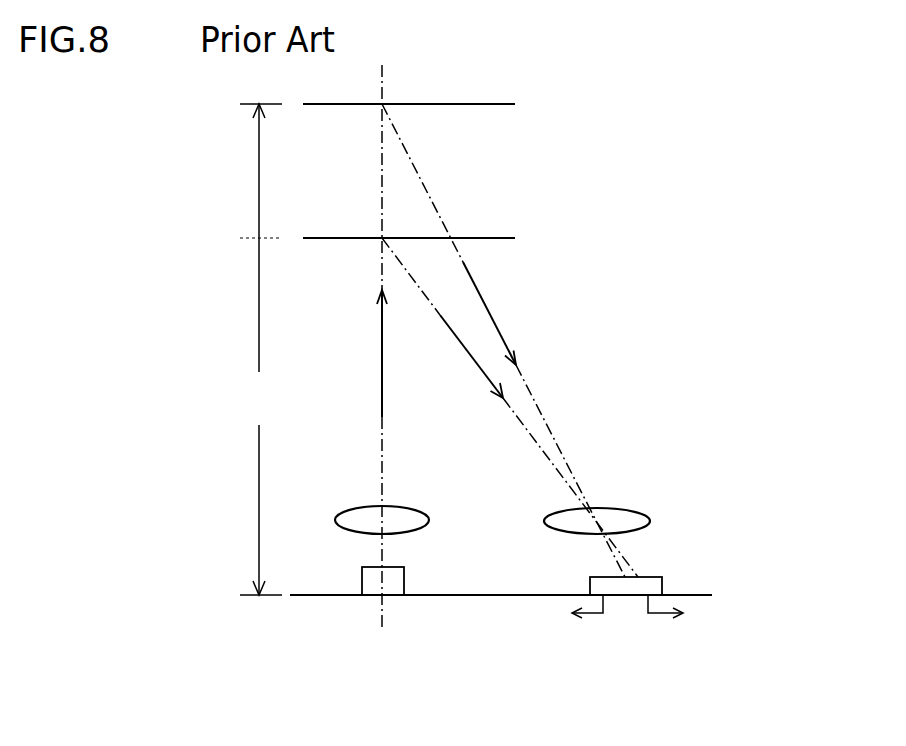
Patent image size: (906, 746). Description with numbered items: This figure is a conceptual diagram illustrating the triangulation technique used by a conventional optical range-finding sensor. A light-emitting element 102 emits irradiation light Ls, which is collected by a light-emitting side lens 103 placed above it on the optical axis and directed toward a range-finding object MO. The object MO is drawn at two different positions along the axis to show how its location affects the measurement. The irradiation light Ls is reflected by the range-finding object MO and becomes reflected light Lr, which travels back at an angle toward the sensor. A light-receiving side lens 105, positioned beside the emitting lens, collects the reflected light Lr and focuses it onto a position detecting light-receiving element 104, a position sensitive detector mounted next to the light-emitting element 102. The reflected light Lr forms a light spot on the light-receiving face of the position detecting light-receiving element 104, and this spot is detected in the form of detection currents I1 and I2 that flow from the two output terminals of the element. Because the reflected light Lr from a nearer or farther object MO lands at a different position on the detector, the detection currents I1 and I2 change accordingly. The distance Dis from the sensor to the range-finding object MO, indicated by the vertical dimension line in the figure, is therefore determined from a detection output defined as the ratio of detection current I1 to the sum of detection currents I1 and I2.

The light-emitting element 102 is at (393, 583).
The light-emitting side lens 103 is at (357, 518).
The position detecting light-receiving element 104 is at (624, 590).
The light-receiving side lens 105 is at (618, 517).
The range-finding object MO is at (440, 172).
The irradiation light Ls is at (380, 366).
The reflected light Lr is at (463, 342).
The distance Dis is at (259, 349).
The detection current I1 is at (689, 617).
The detection current I2 is at (570, 617).